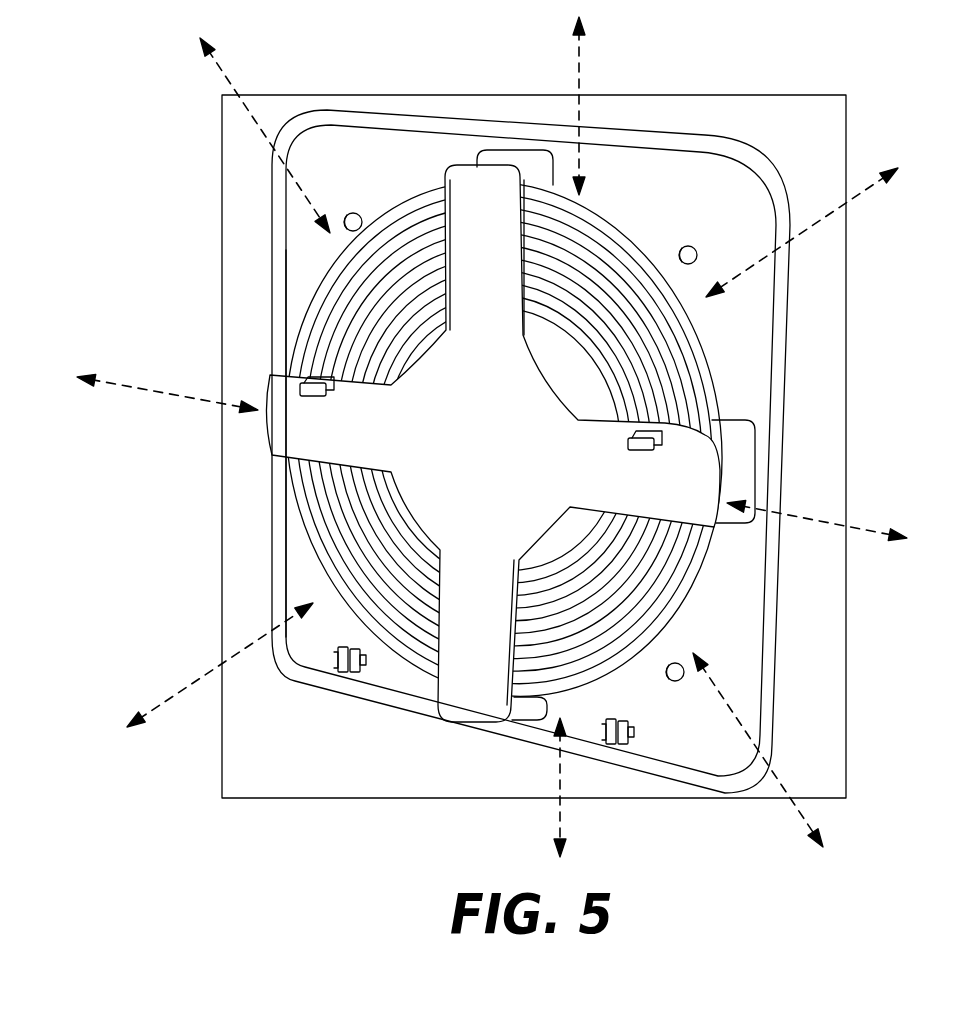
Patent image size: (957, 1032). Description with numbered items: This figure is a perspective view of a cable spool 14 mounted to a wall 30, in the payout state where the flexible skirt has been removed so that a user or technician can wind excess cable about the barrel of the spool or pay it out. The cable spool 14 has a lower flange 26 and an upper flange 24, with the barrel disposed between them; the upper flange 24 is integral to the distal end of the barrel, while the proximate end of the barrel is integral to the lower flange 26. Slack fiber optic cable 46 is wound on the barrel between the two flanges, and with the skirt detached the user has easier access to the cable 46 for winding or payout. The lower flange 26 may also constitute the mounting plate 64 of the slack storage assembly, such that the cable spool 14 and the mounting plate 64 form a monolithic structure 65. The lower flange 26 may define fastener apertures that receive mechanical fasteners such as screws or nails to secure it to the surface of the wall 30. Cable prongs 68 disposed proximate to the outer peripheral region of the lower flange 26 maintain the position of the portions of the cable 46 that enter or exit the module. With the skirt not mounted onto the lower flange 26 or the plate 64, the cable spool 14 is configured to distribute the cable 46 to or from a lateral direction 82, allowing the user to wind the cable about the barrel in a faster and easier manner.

The cable spool 14 is at (470, 212).
The upper flange 24 is at (573, 463).
The lower flange 26 is at (727, 203).
The mounting plate 64 is at (531, 450).
The wall 30 is at (833, 113).
The slack fiber optic cable 46 is at (633, 585).
The monolithic structure 65 is at (290, 274).
The cable prongs 68 is at (644, 748).
The lateral direction 82 is at (228, 78).